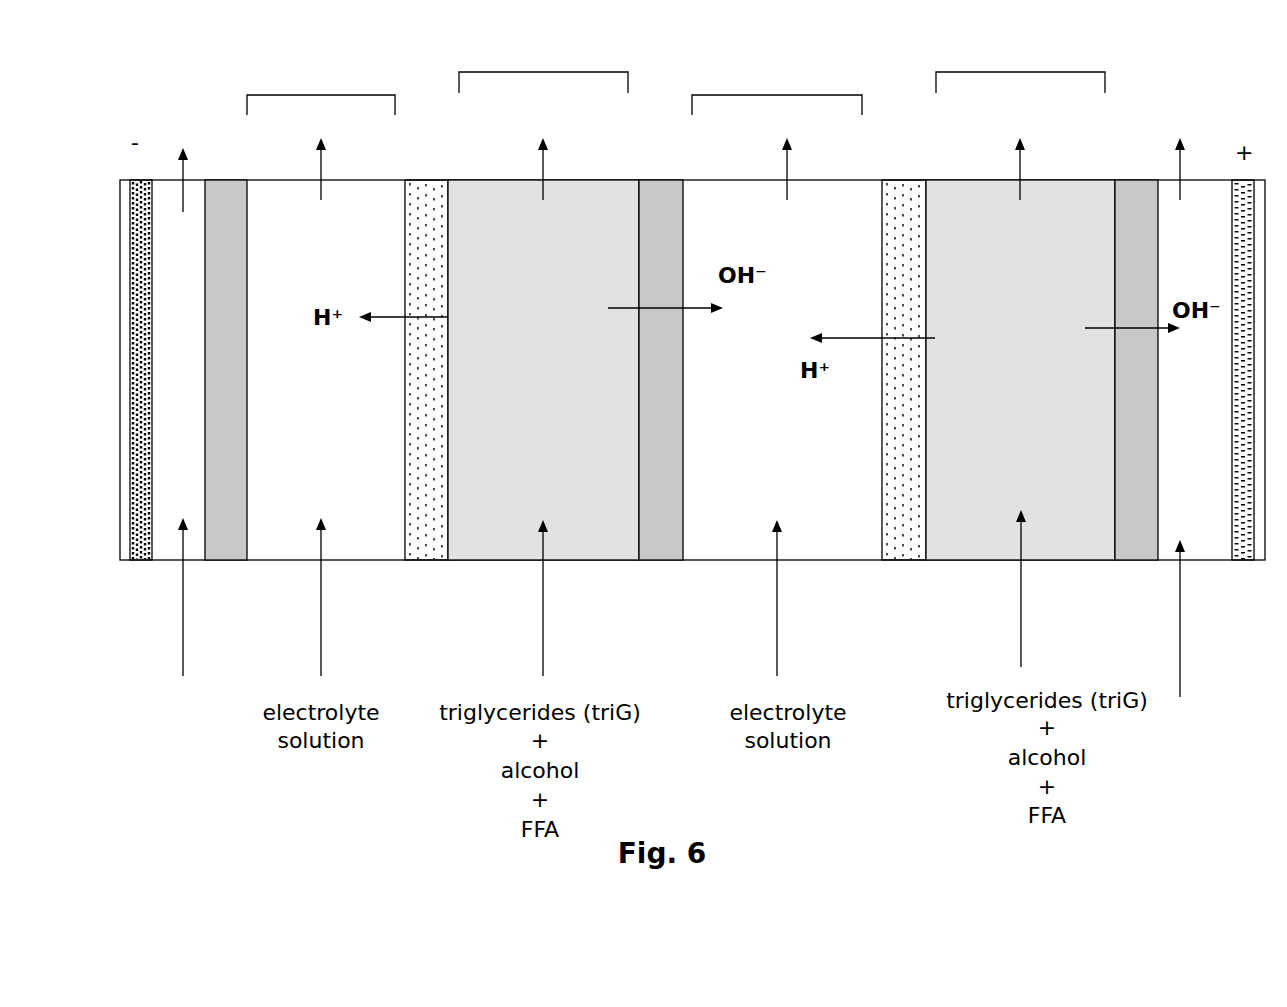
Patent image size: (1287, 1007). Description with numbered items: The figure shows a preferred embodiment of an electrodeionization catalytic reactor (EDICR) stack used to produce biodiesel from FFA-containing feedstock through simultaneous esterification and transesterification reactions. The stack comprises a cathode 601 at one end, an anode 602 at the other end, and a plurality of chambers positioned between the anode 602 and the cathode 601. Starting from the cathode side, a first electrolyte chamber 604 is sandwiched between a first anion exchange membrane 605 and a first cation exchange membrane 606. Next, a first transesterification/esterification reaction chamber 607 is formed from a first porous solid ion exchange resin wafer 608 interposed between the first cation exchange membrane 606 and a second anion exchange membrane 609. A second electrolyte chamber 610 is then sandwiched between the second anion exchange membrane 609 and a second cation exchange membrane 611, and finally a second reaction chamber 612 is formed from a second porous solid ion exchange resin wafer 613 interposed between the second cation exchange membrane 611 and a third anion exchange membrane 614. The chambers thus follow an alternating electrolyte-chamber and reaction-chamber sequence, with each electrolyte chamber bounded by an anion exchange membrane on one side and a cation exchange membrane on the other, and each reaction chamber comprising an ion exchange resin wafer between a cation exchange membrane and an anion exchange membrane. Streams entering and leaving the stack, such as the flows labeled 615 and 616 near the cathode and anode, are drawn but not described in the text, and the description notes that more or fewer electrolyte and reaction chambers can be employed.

The cathode 601 is at (131, 218).
The anode 602 is at (1244, 562).
The first electrolyte chamber 604 is at (320, 93).
The first anion exchange membrane 605 is at (217, 178).
The first cation exchange membrane 606 is at (432, 563).
The first transesterification/esterification reaction chamber 607 is at (545, 70).
The first porous solid ion exchange resin wafer 608 is at (491, 563).
The second anion exchange membrane 609 is at (660, 563).
The second electrolyte chamber 610 is at (777, 93).
The second cation exchange membrane 611 is at (893, 178).
The second reaction chamber 612 is at (1022, 72).
The second porous solid ion exchange resin wafer 613 is at (966, 562).
The third anion exchange membrane 614 is at (1137, 562).
The cathode electrolyte stream 615 is at (172, 618).
The anode electrolyte stream 616 is at (1190, 639).